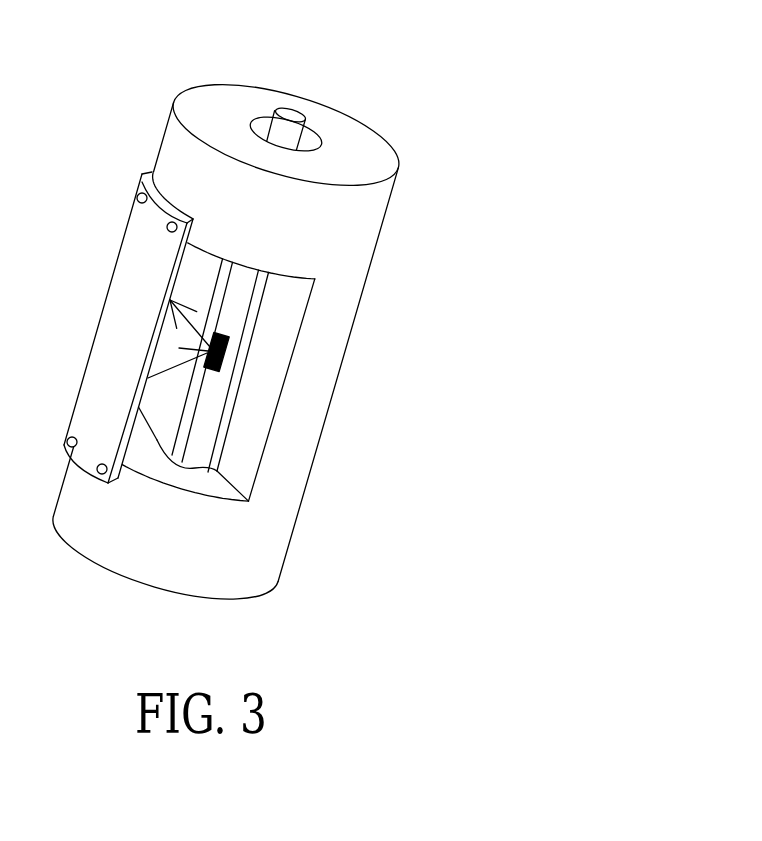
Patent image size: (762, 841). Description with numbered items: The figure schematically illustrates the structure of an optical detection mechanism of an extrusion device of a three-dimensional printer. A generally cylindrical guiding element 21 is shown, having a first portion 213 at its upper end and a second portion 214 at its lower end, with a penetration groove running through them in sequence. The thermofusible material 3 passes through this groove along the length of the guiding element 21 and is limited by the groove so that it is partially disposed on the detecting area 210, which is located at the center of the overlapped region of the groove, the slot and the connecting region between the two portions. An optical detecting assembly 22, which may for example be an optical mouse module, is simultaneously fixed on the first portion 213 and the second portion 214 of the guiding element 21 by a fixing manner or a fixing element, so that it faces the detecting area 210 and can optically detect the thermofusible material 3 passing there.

The guiding element 21 is at (399, 366).
The optical detecting assembly 22 is at (113, 342).
The thermofusible material 3 is at (290, 116).
The detecting area 210 is at (226, 346).
The first portion 213 is at (317, 228).
The second portion 214 is at (228, 553).